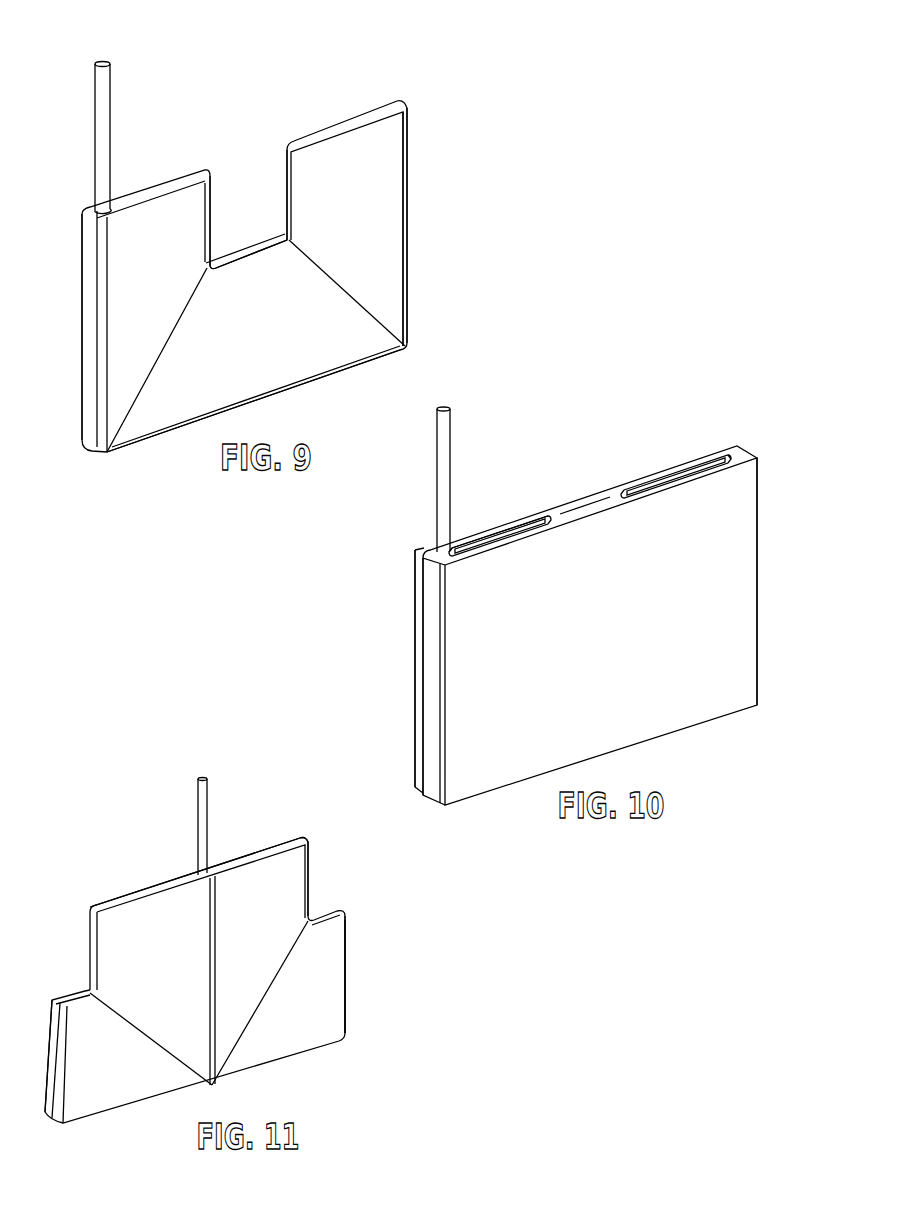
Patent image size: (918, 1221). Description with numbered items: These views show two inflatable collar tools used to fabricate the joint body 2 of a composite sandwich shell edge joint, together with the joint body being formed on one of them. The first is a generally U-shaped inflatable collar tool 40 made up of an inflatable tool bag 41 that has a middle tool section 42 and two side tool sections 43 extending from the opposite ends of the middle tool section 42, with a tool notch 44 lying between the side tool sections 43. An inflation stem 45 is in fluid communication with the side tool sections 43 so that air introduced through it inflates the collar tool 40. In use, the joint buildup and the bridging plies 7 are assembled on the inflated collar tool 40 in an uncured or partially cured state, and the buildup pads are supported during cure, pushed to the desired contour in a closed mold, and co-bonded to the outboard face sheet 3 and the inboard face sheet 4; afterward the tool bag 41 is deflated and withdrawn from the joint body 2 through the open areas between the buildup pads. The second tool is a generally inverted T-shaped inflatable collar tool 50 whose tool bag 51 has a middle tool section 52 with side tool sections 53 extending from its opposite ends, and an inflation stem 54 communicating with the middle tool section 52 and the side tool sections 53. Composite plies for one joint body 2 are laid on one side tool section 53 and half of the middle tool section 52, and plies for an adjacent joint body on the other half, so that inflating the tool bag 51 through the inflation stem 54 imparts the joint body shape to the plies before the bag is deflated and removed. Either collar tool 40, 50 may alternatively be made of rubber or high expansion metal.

In FIG. 9, the U-shaped inflatable collar tool 40 is at (368, 88).
In FIG. 10, the U-shaped inflatable collar tool 40 is at (684, 410).
In FIG. 9, the inflatable tool bag 41 is at (410, 263).
In FIG. 10, the inflatable tool bag 41 is at (418, 690).
In FIG. 9, the middle tool section 42 is at (270, 372).
In FIG. 9, the side tool sections 43 is at (383, 212).
In FIG. 10, the side tool sections 43 is at (428, 583).
In FIG. 9, the tool notch 44 is at (240, 176).
In FIG. 9, the inflation stem 45 is at (101, 114).
In FIG. 10, the inflation stem 45 is at (443, 437).
In FIG. 10, the joint body 2 is at (537, 505).
In FIG. 10, the outboard face sheet 3 is at (478, 557).
In FIG. 10, the inboard face sheet 4 is at (473, 530).
In FIG. 10, the bridging plies 7 is at (593, 500).
In FIG. 11, the inverted T-shaped inflatable collar tool 50 is at (286, 818).
In FIG. 11, the tool bag 51 is at (349, 995).
In FIG. 11, the middle tool section 52 is at (280, 890).
In FIG. 11, the side tool sections 53 is at (320, 956).
In FIG. 11, the inflation stem 54 is at (203, 807).